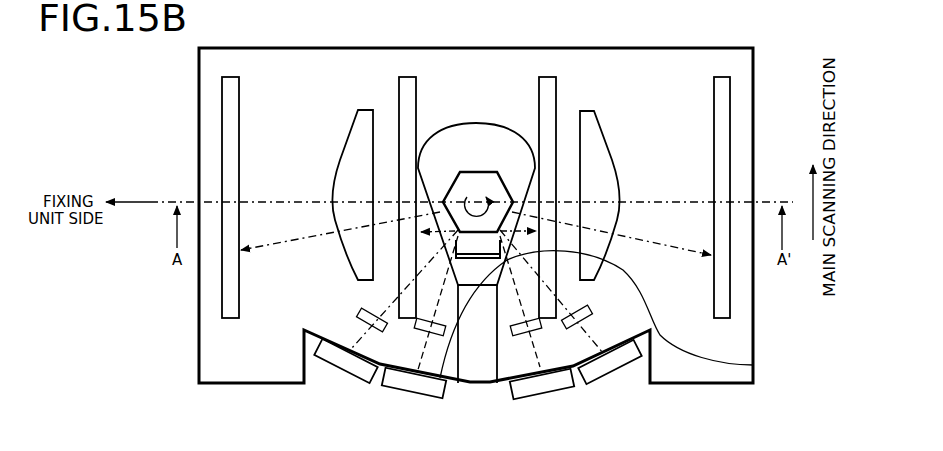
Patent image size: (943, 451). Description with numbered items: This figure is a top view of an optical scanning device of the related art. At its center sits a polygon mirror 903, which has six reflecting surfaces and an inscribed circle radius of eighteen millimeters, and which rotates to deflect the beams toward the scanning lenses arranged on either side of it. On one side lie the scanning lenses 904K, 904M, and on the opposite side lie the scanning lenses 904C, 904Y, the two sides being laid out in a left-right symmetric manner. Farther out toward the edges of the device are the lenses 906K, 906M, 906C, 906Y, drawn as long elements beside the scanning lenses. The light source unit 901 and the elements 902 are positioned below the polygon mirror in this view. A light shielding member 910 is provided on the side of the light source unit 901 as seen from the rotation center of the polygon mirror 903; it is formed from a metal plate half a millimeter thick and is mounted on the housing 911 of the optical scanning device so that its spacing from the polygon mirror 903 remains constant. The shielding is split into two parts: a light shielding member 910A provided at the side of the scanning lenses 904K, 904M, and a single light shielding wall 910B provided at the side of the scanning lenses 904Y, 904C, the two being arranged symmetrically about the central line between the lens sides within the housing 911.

The light source unit 901 is at (362, 375).
The reflecting mirror 902 is at (578, 333).
The polygon mirror 903 is at (478, 182).
The scanning lens 904K is at (320, 149).
The scanning lens 904M is at (368, 110).
The scanning lens 904C is at (623, 149).
The scanning lens 904Y is at (590, 112).
The lens 906K is at (228, 298).
The lens 906M is at (407, 77).
The lens 906C is at (547, 77).
The lens 906Y is at (725, 287).
The light shielding member 910 is at (473, 257).
The light shielding member 910A is at (463, 257).
The light shielding wall 910B is at (753, 367).
The housing 911 is at (490, 122).